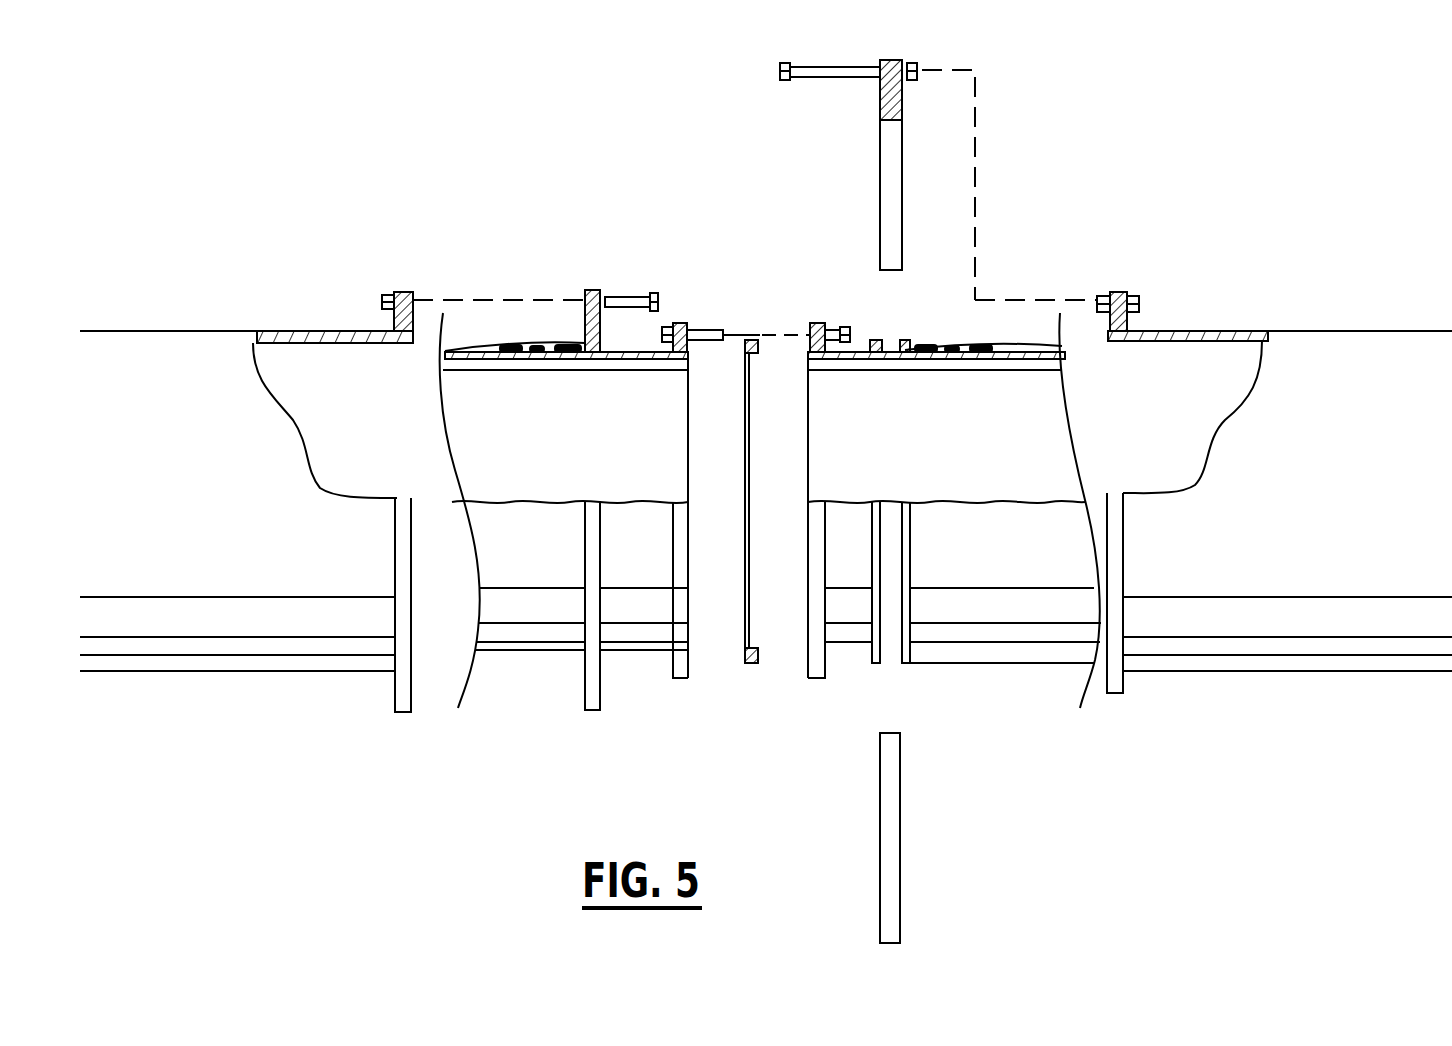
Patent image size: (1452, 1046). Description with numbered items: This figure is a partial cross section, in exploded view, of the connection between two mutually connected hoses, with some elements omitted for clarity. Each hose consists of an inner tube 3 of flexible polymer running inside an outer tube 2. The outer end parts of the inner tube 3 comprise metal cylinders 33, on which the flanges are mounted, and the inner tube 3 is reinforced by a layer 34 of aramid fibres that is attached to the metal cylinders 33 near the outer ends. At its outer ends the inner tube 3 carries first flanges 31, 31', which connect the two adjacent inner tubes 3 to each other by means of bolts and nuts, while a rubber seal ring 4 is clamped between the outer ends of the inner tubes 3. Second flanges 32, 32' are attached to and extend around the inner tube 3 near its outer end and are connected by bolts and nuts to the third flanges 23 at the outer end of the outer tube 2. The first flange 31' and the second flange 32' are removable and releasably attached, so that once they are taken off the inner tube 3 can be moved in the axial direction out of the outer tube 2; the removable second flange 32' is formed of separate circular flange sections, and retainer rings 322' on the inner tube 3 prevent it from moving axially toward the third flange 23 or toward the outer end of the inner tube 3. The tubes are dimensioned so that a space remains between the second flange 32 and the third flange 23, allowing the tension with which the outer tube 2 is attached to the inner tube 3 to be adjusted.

The outer tube 2 is at (1345, 331).
The inner tube 3 is at (1012, 650).
The rubber seal ring 4 is at (750, 663).
The third flange 23 is at (400, 292).
The first flange 31 is at (711, 491).
The removable first flange 31' is at (804, 544).
The second flange 32 is at (618, 495).
The removable second flange 32' is at (877, 501).
The retainer ring 322' is at (905, 544).
The metal cylinder 33 is at (858, 352).
The layer of aramid fibres 34 is at (497, 345).